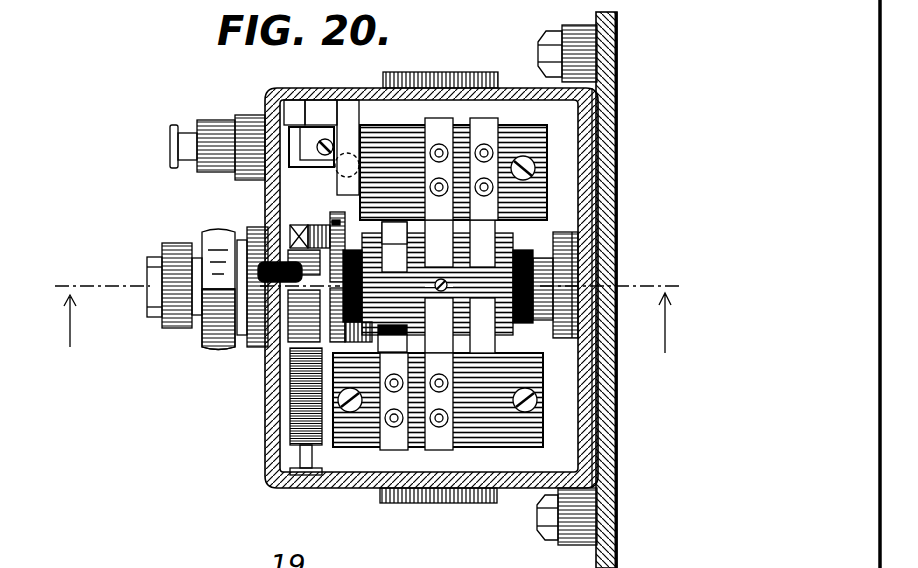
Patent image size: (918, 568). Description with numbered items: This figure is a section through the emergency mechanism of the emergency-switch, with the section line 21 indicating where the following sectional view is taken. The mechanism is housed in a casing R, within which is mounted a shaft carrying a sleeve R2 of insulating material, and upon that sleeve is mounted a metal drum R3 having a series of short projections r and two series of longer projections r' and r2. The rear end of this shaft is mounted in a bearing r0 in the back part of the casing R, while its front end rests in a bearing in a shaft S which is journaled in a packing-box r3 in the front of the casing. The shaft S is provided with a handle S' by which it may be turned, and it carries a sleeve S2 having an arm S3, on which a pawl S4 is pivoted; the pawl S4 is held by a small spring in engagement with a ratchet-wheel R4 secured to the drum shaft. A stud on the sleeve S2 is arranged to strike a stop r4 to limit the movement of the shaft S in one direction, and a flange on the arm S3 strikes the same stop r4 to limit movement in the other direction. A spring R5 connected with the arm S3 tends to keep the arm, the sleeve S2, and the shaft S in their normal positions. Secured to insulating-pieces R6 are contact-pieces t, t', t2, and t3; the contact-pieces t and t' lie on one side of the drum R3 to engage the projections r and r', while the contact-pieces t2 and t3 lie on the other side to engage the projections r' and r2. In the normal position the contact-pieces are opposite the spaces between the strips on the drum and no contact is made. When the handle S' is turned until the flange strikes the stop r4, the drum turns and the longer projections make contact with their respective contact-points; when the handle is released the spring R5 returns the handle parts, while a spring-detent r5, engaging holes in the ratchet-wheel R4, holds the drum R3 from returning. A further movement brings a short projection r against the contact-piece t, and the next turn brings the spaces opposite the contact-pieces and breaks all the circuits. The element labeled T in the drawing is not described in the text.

The plunger T is at (171, 145).
The casing R is at (263, 467).
The sleeve of insulating material R2 is at (543, 268).
The metal drum R3 is at (520, 337).
The ratchet-wheel R4 is at (295, 225).
The spring R5 is at (300, 400).
The insulating-pieces R6 is at (547, 147).
The shaft S is at (129, 303).
The handle S' is at (157, 264).
The sleeve S2 is at (165, 352).
The arm S3 is at (328, 508).
The pawl S4 is at (363, 522).
The short projections r is at (438, 287).
The longer projections r' is at (433, 286).
The longer projections r2 is at (477, 315).
The packing-box r3 is at (256, 310).
The stop r4 is at (265, 276).
The spring-detent r5 is at (330, 235).
The bearing r0 is at (546, 272).
The contact-piece t is at (394, 455).
The contact-piece t' is at (439, 455).
The contact-piece t2 is at (434, 190).
The contact-piece t3 is at (490, 190).
The section line 21 is at (366, 312).